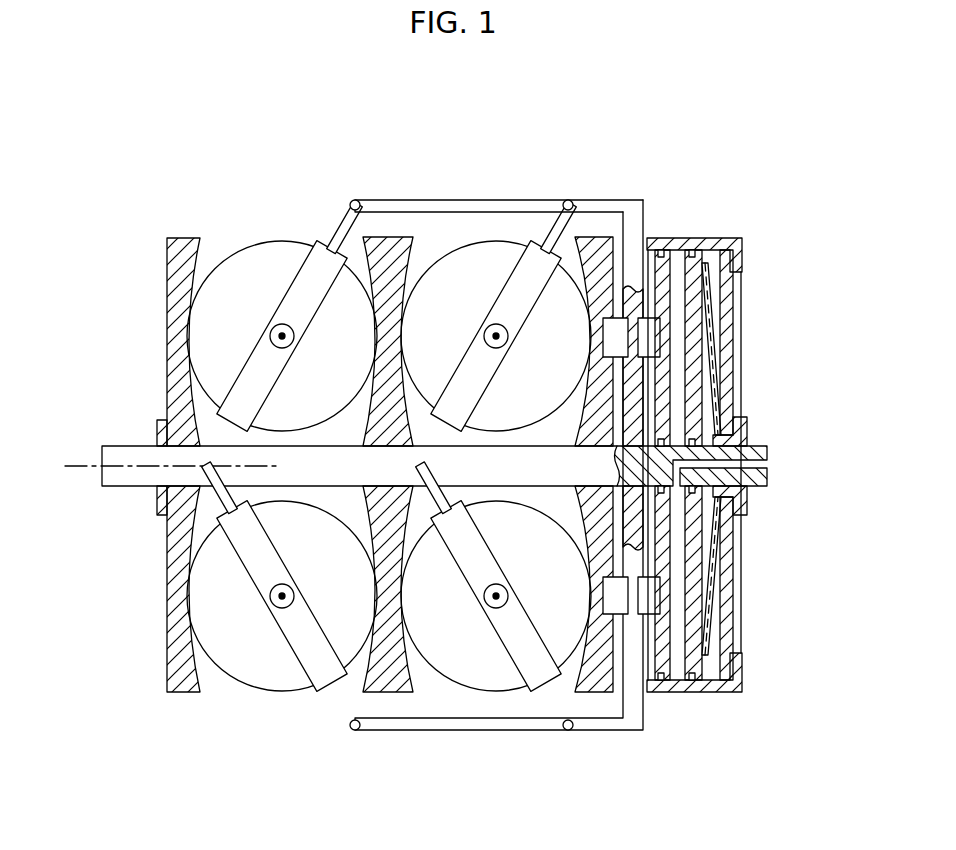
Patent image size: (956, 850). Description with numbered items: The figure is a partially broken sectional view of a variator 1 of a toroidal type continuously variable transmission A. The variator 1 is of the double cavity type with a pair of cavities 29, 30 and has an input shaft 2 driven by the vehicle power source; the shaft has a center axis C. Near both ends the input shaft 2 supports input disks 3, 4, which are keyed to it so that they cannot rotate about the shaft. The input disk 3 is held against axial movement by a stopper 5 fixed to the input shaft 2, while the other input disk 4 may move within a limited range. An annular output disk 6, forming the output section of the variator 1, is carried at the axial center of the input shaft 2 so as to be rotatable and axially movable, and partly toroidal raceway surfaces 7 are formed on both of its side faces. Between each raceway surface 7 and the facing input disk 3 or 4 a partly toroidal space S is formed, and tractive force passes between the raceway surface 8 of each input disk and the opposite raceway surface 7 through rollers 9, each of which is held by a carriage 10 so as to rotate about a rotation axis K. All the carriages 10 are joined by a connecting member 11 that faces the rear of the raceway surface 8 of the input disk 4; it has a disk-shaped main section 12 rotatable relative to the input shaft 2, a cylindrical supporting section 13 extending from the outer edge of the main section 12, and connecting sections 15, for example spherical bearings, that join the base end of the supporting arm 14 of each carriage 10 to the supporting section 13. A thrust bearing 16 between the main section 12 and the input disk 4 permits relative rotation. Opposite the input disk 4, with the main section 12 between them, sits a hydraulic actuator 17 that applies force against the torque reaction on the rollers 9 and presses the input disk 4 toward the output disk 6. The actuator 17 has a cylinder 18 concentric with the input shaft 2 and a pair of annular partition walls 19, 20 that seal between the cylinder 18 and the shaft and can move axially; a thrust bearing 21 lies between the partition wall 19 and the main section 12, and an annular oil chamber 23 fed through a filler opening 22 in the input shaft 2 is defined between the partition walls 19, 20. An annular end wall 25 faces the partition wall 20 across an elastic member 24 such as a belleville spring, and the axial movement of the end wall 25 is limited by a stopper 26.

The variator 1 is at (284, 206).
The input shaft 2 is at (133, 444).
The input disk 3 is at (166, 277).
The input disk 4 is at (594, 234).
The stopper 5 is at (153, 508).
The output disk 6 is at (388, 695).
The raceway surface 7 is at (367, 290).
The raceway surface 8 is at (188, 272).
The roller 9 is at (258, 238).
The carriage 10 is at (283, 294).
The connecting member 11 is at (598, 196).
The main section 12 is at (633, 233).
The supporting section 13 is at (405, 199).
The supporting arm 14 is at (338, 228).
The connecting section 15 is at (355, 199).
The thrust bearing 16 is at (606, 340).
The hydraulic actuator 17 is at (728, 230).
The cylinder 18 is at (677, 697).
The partition wall 19 is at (664, 267).
The partition wall 20 is at (693, 298).
The thrust bearing 21 is at (650, 342).
The filler opening 22 is at (758, 465).
The oil chamber 23 is at (683, 372).
The elastic member 24 is at (712, 600).
The end wall 25 is at (733, 575).
The stopper 26 is at (745, 432).
The cavity 29 is at (212, 680).
The cavity 30 is at (425, 678).
The continuously variable transmission A is at (737, 187).
The center axis C is at (80, 466).
The rotation axis K is at (289, 345).
The space S is at (334, 440).